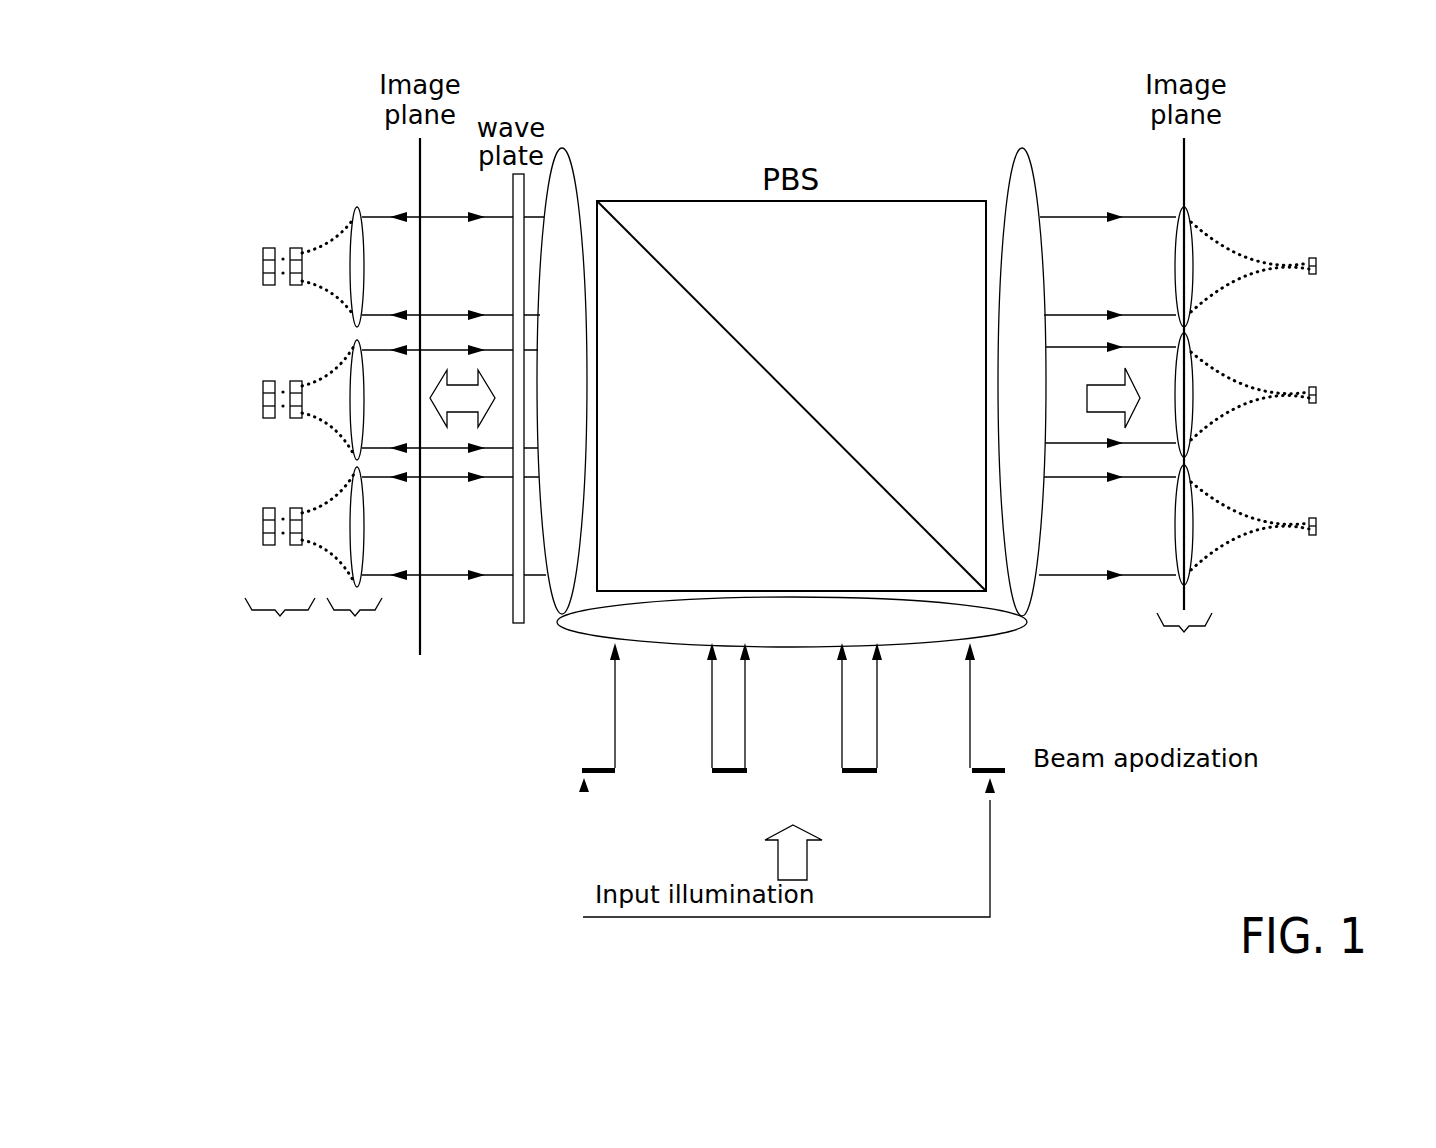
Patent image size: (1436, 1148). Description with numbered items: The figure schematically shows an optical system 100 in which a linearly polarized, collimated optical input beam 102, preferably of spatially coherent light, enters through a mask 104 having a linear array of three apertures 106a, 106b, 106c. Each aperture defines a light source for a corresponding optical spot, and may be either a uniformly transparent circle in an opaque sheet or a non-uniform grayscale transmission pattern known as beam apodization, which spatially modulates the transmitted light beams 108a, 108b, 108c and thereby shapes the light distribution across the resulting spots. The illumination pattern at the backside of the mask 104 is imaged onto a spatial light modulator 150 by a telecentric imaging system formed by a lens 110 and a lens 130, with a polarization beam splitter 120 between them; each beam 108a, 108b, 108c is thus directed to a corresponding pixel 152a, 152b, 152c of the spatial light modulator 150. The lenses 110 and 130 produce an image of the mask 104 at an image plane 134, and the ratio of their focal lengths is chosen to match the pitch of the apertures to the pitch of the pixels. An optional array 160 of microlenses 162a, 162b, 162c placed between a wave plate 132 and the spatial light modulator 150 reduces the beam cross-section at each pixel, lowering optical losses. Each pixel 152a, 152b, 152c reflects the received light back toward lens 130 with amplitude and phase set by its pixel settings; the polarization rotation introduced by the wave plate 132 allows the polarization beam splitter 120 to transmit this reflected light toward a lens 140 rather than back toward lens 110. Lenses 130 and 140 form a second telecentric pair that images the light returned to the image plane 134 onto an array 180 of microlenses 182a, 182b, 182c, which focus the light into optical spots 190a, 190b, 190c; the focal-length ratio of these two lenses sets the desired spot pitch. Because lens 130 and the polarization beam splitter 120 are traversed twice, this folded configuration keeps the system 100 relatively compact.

The optical system 100 is at (300, 832).
The optical input beam 102 is at (950, 885).
The mask 104 is at (600, 768).
The aperture 106a is at (675, 777).
The aperture 106b is at (787, 780).
The aperture 106c is at (918, 780).
The transmitted light beam 108a is at (662, 698).
The transmitted light beam 108b is at (817, 726).
The transmitted light beam 108c is at (933, 726).
The lens 110 is at (987, 625).
The polarization beam splitter 120 is at (890, 200).
The lens 130 is at (565, 192).
The wave plate 132 is at (511, 599).
The image plane 134 is at (420, 665).
The lens 140 is at (1022, 185).
The spatial light modulator 150 is at (280, 625).
The pixel 152a is at (258, 516).
The pixel 152b is at (256, 398).
The pixel 152c is at (258, 260).
The array of microlenses 160 is at (354, 625).
The microlens 162a is at (350, 540).
The microlens 162b is at (350, 428).
The microlens 162c is at (352, 215).
The array of microlenses 180 is at (1184, 402).
The microlens 182a is at (1188, 222).
The microlens 182b is at (1188, 352).
The microlens 182c is at (1188, 483).
The optical spot 190a is at (1318, 266).
The optical spot 190b is at (1318, 395).
The optical spot 190c is at (1318, 526).